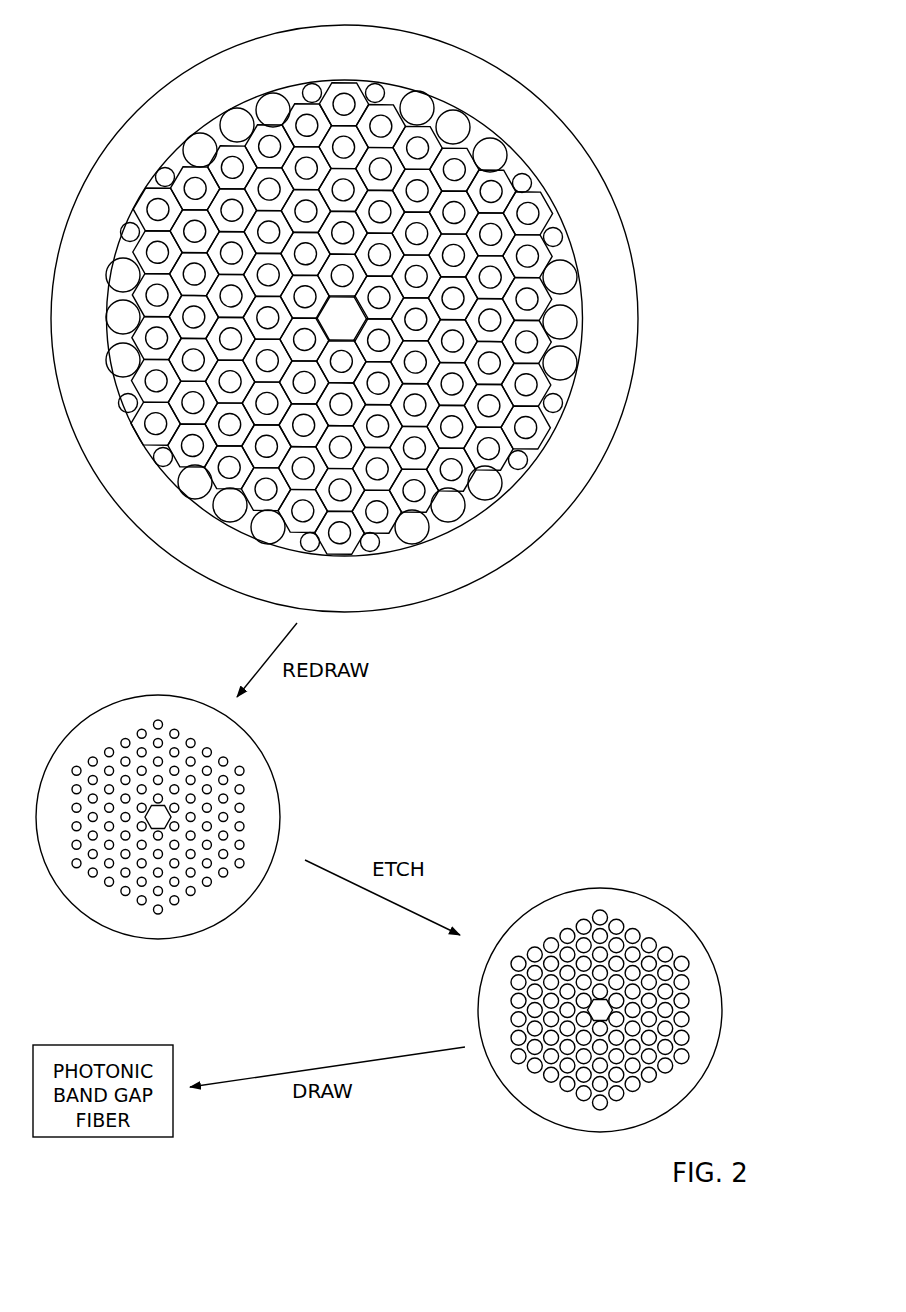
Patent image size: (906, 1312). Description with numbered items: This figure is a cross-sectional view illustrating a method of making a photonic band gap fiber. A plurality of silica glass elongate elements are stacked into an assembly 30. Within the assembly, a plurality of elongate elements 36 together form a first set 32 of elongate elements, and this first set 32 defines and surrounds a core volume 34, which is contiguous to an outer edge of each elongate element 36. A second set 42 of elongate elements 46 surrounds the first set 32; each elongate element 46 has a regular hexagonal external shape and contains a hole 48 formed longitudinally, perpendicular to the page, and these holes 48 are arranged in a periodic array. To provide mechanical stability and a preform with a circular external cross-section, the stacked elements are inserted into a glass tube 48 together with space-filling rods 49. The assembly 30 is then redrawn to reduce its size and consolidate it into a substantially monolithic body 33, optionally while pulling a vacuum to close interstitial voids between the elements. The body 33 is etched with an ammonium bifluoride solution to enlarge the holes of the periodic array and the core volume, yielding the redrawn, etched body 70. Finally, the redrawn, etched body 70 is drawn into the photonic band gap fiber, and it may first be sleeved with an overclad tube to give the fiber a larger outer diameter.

The assembly 30 is at (107, 72).
The first set of elongate elements 32 is at (283, 350).
The substantially monolithic body 33 is at (295, 788).
The core volume 34 is at (337, 327).
The elongate elements 36 is at (393, 293).
The second set of elongate elements 42 is at (125, 248).
The elongate element 46 is at (546, 225).
The hole 48 is at (538, 343).
The space-filling rods 49 is at (485, 490).
The redrawn, etched body 70 is at (520, 1105).